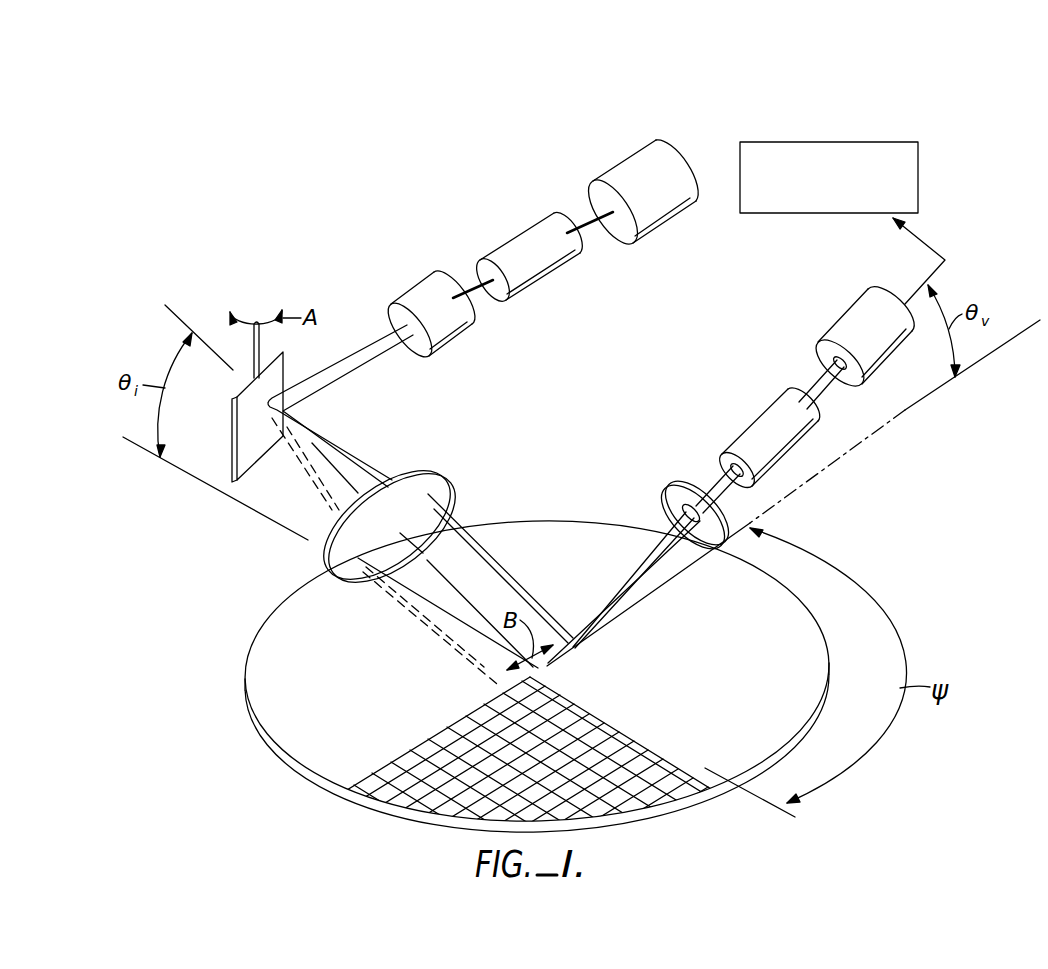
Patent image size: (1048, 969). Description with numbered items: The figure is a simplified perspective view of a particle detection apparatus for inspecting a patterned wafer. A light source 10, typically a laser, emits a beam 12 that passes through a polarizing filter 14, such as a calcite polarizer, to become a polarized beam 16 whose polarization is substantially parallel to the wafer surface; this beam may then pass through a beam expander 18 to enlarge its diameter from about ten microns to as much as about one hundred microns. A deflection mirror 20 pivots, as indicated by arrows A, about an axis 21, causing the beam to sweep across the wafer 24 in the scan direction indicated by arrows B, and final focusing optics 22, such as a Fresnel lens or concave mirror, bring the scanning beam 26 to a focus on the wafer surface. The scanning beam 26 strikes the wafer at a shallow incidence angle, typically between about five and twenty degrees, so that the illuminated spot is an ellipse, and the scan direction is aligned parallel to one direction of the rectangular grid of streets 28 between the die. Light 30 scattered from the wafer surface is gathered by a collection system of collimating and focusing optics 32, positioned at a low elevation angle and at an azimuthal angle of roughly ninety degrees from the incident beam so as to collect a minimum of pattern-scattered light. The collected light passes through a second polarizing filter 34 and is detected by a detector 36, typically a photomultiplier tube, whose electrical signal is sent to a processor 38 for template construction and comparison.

The light source 10 is at (626, 167).
The beam 12 is at (597, 216).
The polarizing filter 14 is at (538, 231).
The polarized beam 16 is at (472, 282).
The beam expander 18 is at (418, 292).
The deflection mirror 20 is at (232, 422).
The axis 21 is at (259, 342).
The final focusing optics 22 is at (436, 469).
The wafer 24 is at (813, 653).
The scanning beam 26 is at (500, 563).
The street 28 is at (446, 742).
The scattered light 30 is at (638, 562).
The collimating and focusing optics 32 is at (678, 482).
The polarizing filter 34 is at (757, 421).
The detector 36 is at (840, 328).
The processor 38 is at (910, 163).